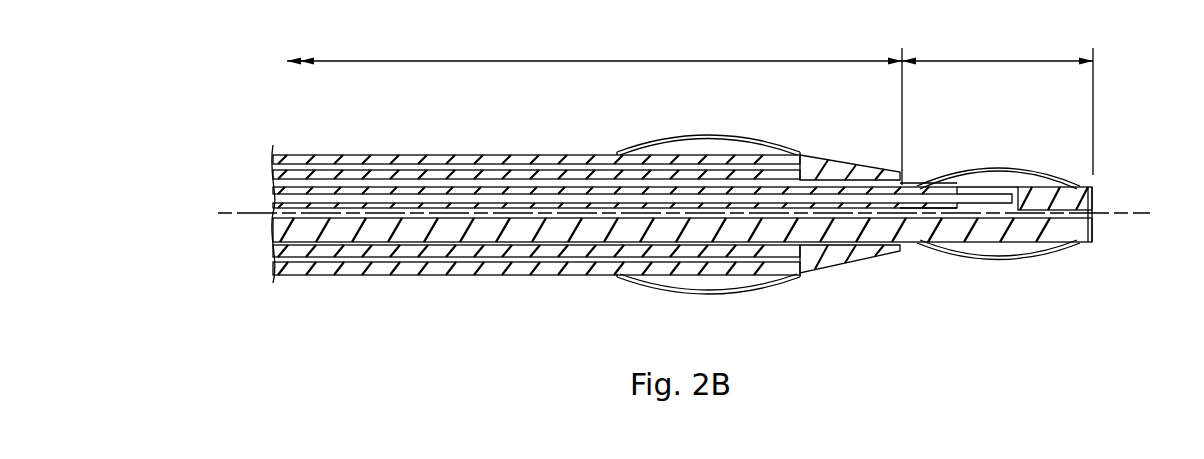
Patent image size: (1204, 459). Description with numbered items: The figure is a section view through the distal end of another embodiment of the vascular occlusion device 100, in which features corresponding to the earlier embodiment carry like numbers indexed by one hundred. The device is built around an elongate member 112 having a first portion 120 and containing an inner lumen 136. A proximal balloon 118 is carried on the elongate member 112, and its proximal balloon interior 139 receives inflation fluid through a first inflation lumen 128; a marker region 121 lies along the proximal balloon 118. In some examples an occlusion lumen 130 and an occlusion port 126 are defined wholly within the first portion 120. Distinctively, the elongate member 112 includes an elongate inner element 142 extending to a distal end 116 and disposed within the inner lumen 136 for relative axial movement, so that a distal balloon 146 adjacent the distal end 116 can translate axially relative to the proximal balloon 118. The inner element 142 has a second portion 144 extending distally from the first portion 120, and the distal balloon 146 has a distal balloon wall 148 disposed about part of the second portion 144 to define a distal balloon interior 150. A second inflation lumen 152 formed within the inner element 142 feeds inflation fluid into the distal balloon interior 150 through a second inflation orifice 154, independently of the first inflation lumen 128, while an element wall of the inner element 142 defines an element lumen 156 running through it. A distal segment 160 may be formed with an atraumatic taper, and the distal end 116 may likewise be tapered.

The vascular occlusion device 100 is at (205, 121).
The elongate member 112 is at (408, 288).
The distal end 116 is at (1094, 196).
The proximal balloon 118 is at (675, 291).
The first portion 120 is at (646, 61).
The upper bulge 121 is at (708, 160).
The occlusion port 126 is at (840, 268).
The first inflation lumen 128 is at (390, 168).
The occlusion lumen 130 is at (479, 269).
The inner lumen 136 is at (510, 186).
The proximal balloon interior 139 is at (710, 281).
The elongate inner element 142 is at (914, 176).
The second portion 144 is at (1032, 61).
The distal balloon 146 is at (1040, 262).
The distal balloon wall 148 is at (963, 262).
The distal balloon interior 150 is at (1000, 262).
The second inflation lumen 152 is at (322, 199).
The second inflation orifice 154 is at (1013, 192).
The element lumen 156 is at (1074, 244).
The distal segment 160 is at (842, 162).